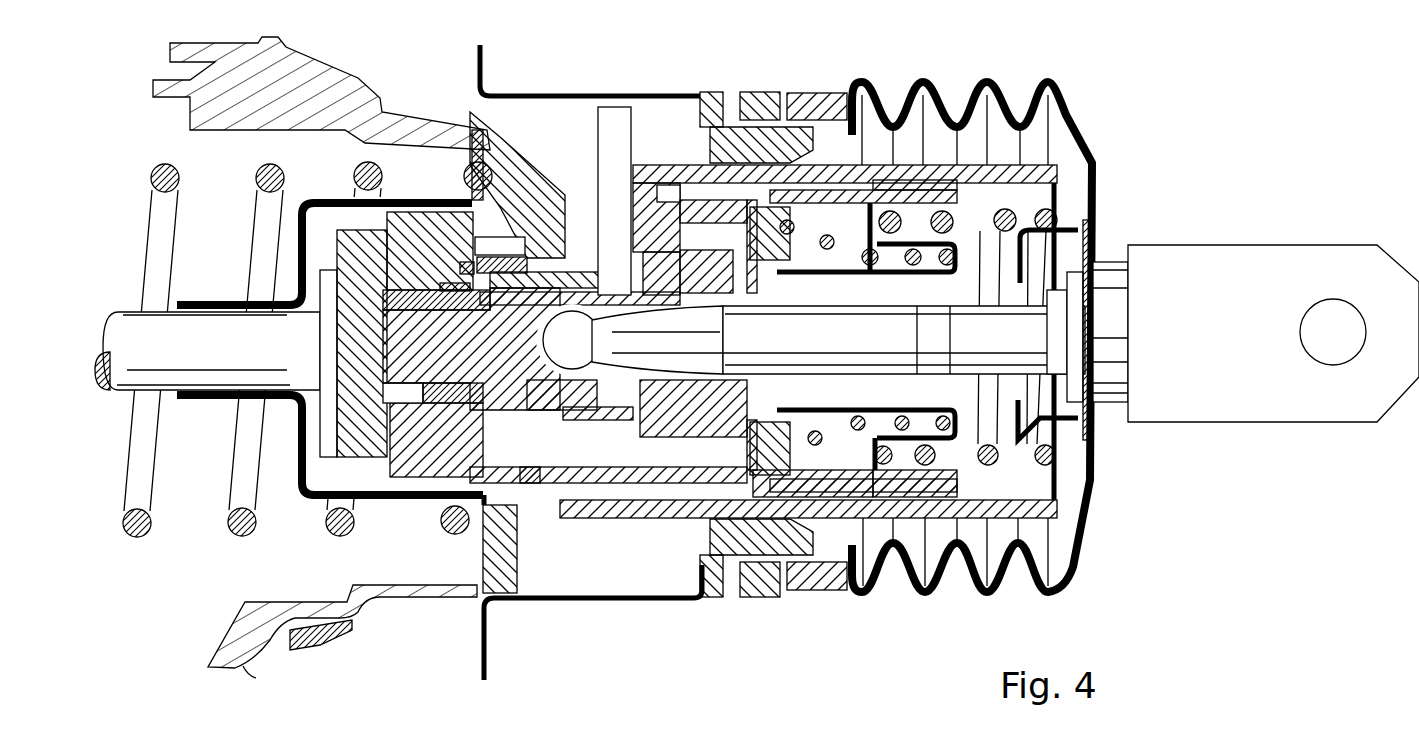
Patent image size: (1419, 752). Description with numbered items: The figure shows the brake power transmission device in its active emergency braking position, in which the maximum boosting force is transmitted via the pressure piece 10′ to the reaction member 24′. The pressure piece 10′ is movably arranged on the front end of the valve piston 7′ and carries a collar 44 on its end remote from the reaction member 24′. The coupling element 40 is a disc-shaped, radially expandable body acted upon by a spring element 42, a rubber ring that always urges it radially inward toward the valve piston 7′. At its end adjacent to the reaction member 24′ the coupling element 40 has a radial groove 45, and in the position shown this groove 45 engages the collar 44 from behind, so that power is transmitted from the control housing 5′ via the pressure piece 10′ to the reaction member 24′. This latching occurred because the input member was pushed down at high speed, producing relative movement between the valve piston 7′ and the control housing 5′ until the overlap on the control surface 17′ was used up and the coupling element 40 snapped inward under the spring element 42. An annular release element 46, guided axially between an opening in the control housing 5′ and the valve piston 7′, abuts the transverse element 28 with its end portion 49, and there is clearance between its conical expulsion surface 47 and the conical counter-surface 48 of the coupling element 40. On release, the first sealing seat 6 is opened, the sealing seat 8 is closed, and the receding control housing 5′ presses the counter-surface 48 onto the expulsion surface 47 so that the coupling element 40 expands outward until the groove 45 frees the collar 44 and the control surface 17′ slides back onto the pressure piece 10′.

The collar 44 is at (455, 288).
The radial groove 45 is at (468, 262).
The coupling element 40 is at (497, 236).
The spring element 42 is at (553, 270).
The release element 46 is at (590, 270).
The end portion 49 is at (597, 243).
The control housing 5′ is at (878, 168).
The control surface 17′ is at (612, 322).
The reaction member 24′ is at (300, 500).
The pressure piece 10′ is at (400, 500).
The counter-surface 48 is at (530, 470).
The expulsion surface 47 is at (572, 430).
The transverse element 28 is at (628, 430).
The valve piston 7′ is at (687, 448).
The first sealing seat 6 is at (727, 577).
The sealing seat 8 is at (797, 590).